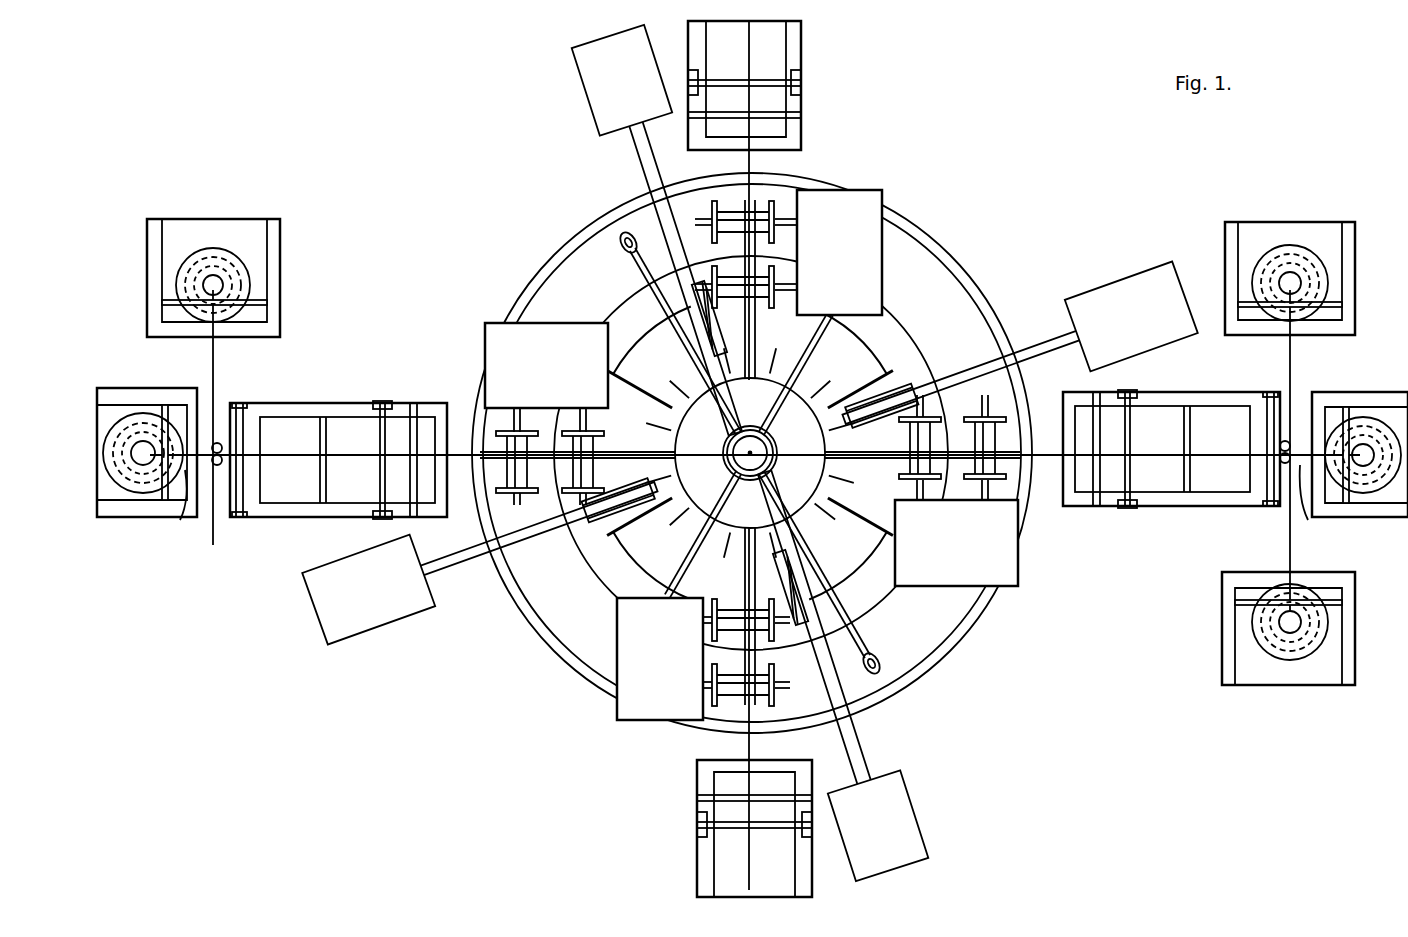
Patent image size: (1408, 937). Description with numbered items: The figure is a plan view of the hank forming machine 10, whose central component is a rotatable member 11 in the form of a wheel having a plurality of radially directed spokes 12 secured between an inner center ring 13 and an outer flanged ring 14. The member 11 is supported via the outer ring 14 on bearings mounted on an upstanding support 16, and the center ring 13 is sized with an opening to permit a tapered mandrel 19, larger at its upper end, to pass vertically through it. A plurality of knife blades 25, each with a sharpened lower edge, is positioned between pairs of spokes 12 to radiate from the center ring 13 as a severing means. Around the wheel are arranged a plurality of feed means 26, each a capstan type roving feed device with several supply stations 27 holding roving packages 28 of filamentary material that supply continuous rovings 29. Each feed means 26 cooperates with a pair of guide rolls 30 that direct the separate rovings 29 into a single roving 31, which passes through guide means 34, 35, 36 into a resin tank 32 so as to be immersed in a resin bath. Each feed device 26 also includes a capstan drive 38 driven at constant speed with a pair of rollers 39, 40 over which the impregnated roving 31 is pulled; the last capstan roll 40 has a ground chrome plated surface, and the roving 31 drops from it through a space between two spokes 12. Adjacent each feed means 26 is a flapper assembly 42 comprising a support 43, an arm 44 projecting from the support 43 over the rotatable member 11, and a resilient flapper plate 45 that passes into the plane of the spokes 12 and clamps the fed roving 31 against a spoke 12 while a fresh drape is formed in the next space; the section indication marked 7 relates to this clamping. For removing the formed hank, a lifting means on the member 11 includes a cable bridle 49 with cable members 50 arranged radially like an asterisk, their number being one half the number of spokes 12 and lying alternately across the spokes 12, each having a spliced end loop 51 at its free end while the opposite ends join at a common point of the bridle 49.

The section line 7 is at (603, 425).
The hank forming machine 10 is at (962, 232).
The rotatable member 11 is at (945, 293).
The spokes 12 is at (640, 375).
The center ring 13 is at (812, 478).
The outer flanged ring 14 is at (955, 620).
The upstanding support 16 is at (990, 597).
The tapered mandrel 19 is at (732, 442).
The knife blades 25 is at (690, 395).
The feed means 26 is at (822, 80).
The supply stations 27 is at (275, 247).
The roving packages 28 is at (208, 250).
The roving 29 is at (188, 505).
The guide rolls 30 is at (222, 460).
The combined roving 31 is at (296, 457).
The resin tank 32 is at (332, 403).
The guide means 34 is at (320, 498).
The guide means 35 is at (378, 432).
The guide means 36 is at (415, 420).
The capstan drive 38 is at (485, 330).
The roller 39 is at (519, 495).
The last capstan roll 40 is at (575, 495).
The flapper assembly 42 is at (915, 380).
The support 43 is at (1078, 300).
The arm 44 is at (1040, 345).
The flapper plate 45 is at (920, 405).
The cable bridle 49 is at (765, 413).
The cable members 50 is at (635, 270).
The spliced end loop 51 is at (632, 240).